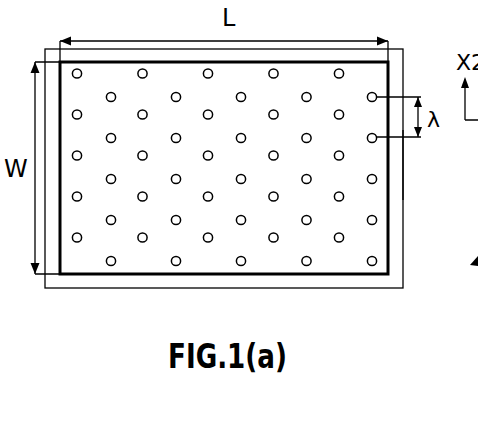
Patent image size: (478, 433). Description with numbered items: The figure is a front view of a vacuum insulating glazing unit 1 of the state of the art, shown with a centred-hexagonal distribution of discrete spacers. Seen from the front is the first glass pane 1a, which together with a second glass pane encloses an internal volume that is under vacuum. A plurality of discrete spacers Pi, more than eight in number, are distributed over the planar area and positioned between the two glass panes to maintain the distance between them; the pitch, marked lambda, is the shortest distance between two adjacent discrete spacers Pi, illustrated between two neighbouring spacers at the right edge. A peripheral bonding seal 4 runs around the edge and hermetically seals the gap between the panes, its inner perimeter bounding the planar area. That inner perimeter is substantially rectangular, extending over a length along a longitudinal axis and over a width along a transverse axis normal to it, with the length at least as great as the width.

The vacuum insulating glazing unit 1 is at (417, 265).
The first glass pane 1a is at (402, 162).
The peripheral bonding seal 4 is at (258, 277).
The discrete spacer Pi is at (111, 267).